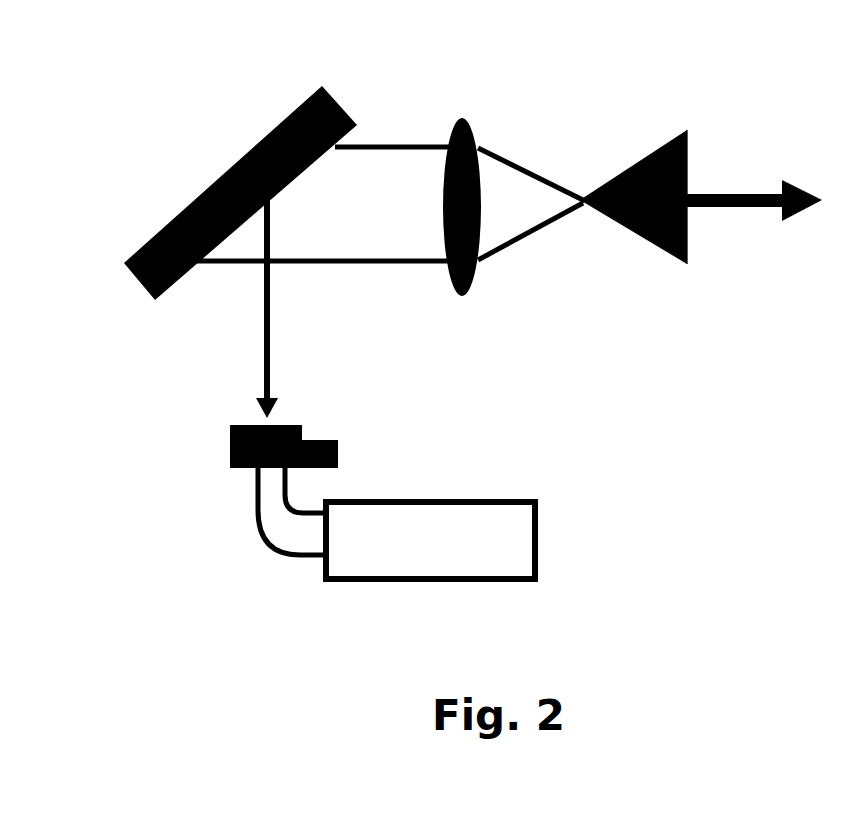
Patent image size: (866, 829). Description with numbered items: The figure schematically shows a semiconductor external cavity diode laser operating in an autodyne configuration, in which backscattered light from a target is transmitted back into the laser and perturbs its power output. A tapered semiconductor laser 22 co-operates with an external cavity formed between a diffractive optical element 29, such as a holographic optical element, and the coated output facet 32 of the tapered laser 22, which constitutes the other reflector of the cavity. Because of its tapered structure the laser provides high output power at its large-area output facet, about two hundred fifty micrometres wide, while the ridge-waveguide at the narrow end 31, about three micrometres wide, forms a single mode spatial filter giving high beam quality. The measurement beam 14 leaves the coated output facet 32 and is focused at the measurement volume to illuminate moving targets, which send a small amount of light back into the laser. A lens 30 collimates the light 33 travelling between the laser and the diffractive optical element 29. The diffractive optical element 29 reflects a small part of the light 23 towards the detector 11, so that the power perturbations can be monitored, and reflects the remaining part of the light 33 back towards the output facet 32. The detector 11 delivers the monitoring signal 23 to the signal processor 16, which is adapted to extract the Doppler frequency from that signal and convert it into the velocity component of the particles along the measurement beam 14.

The detector 11 is at (232, 468).
The measurement beam 14 is at (750, 207).
The signal processor 16 is at (540, 530).
The tapered semiconductor laser 22 is at (663, 250).
The monitoring signal 23 is at (268, 340).
The diffractive optical element 29 is at (152, 298).
The lens 30 is at (458, 295).
The narrow end 31 is at (582, 195).
The coated output facet 32 is at (688, 170).
The light 33 is at (358, 200).